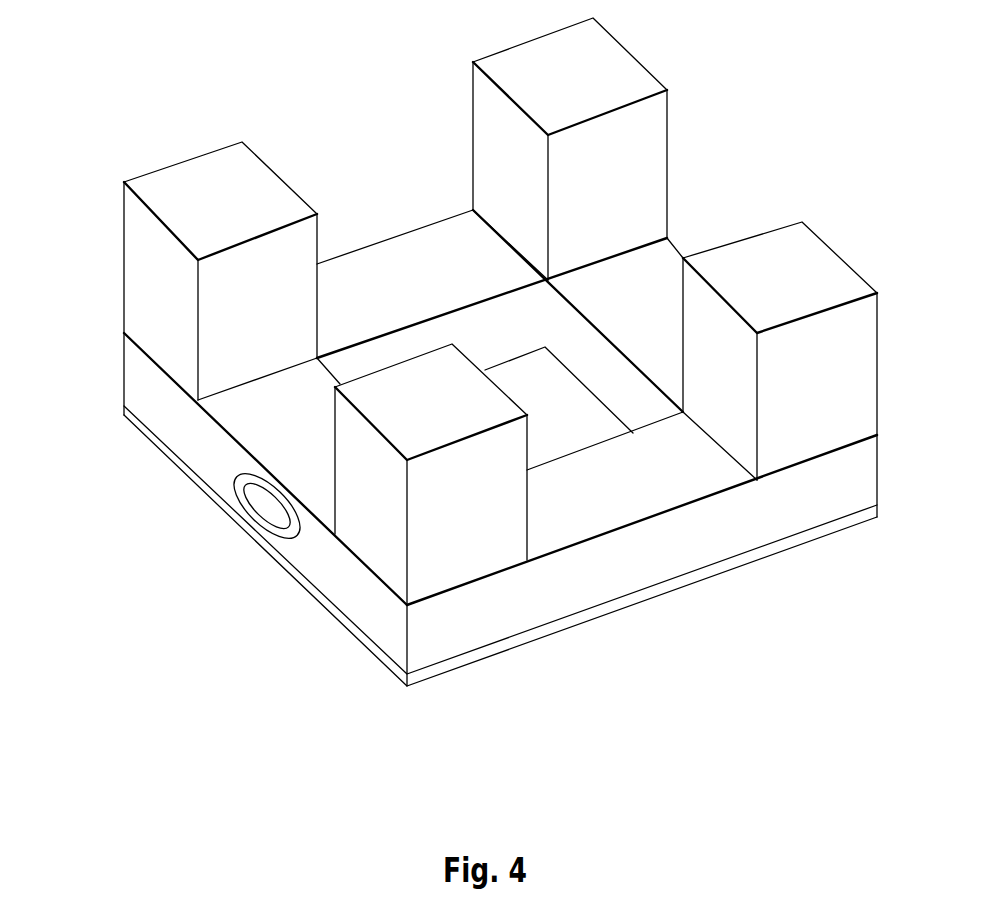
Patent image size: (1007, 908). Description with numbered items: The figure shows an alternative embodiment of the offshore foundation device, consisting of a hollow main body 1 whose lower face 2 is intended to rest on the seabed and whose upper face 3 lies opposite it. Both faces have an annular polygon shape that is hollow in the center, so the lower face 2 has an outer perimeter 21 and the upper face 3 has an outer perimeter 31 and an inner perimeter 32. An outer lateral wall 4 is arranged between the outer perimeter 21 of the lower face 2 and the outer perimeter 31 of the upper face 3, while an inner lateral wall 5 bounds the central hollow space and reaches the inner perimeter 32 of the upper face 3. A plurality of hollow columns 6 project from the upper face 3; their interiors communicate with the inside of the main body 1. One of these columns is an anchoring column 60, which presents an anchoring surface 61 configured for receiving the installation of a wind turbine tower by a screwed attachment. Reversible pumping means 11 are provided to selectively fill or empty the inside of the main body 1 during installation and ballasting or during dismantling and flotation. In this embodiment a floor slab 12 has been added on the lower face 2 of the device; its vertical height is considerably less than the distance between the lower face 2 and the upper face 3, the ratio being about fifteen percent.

The main body 1 is at (145, 507).
The lower face 2 is at (550, 623).
The outer perimeter 21 is at (590, 610).
The upper face 3 is at (430, 320).
The outer perimeter 31 is at (680, 510).
The inner perimeter 32 is at (395, 275).
The outer lateral wall 4 is at (182, 423).
The inner lateral wall 5 is at (540, 320).
The columns 6 is at (523, 142).
The anchoring column 60 is at (725, 348).
The anchoring surface 61 is at (765, 287).
The reversible pumping means 11 is at (273, 528).
The floor slab 12 is at (572, 382).